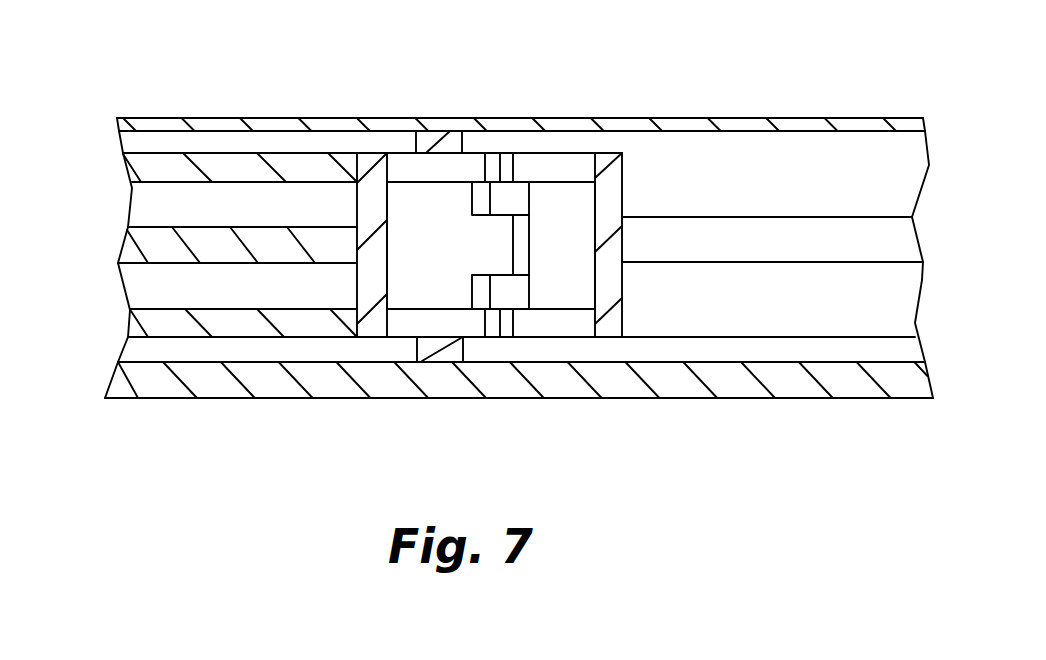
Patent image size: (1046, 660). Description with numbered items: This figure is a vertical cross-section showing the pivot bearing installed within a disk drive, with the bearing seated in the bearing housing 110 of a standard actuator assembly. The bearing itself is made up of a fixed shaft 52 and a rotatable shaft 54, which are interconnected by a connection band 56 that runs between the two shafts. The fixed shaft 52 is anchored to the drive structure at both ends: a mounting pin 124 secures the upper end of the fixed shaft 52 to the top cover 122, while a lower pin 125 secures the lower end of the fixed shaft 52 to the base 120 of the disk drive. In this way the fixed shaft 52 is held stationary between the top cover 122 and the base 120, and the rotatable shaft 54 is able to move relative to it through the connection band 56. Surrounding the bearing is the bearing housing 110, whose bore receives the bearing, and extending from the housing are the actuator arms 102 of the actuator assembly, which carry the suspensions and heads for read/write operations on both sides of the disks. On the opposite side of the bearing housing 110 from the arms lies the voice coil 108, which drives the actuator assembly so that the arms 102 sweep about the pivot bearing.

The fixed shaft 52 is at (445, 175).
The rotatable shaft 54 is at (580, 255).
The connection band 56 is at (443, 263).
The actuator arm 102 is at (147, 168).
The voice coil 108 is at (860, 242).
The bearing housing 110 is at (372, 198).
The base 120 is at (162, 383).
The top cover 122 is at (190, 127).
The mounting pin 124 is at (415, 140).
The lower pin 125 is at (412, 343).